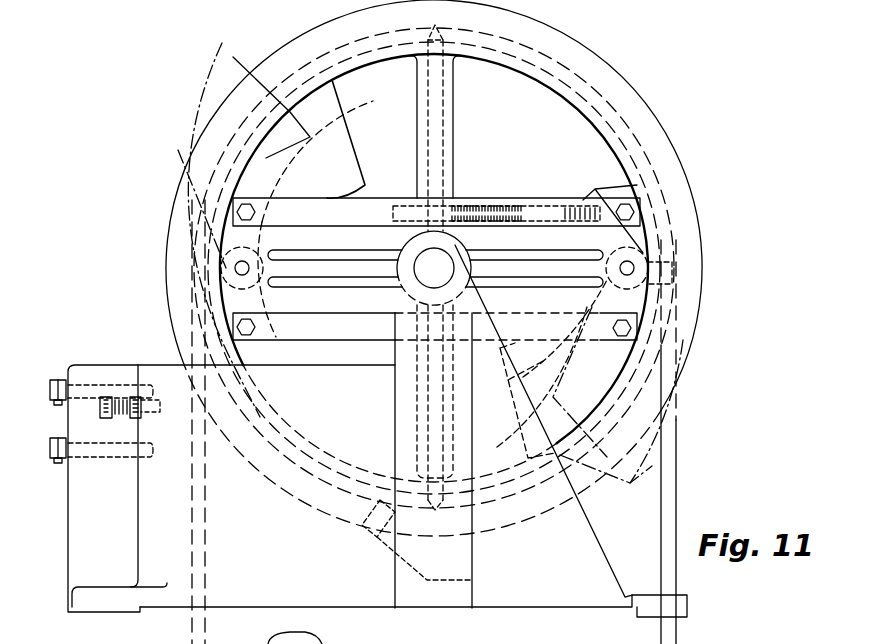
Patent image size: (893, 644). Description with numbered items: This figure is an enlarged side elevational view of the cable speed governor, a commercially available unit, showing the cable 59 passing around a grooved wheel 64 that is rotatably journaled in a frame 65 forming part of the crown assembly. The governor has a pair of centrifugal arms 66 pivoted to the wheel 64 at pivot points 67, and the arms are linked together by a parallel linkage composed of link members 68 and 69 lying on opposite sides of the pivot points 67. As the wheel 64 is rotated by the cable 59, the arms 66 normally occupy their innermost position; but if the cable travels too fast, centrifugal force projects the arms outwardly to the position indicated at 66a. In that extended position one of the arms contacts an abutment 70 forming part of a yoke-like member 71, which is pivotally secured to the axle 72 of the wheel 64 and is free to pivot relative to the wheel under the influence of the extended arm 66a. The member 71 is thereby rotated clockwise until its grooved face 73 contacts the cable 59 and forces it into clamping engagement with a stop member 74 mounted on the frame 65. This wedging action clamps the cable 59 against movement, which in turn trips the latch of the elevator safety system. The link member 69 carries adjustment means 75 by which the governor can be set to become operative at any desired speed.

The cable 59 is at (196, 551).
The grooved wheel 64 is at (511, 66).
The frame 65 is at (530, 596).
The centrifugal arms 66 is at (338, 133).
The extended position of arm 66a is at (222, 43).
The pivot points 67 is at (234, 268).
The link member 68 is at (345, 336).
The link member 69 is at (373, 197).
The abutment 70 is at (462, 550).
The yoke-like member 71 is at (402, 418).
The axle 72 is at (438, 258).
The grooved face 73 is at (372, 532).
The stop member 74 is at (156, 478).
The adjustment means 75 is at (531, 191).